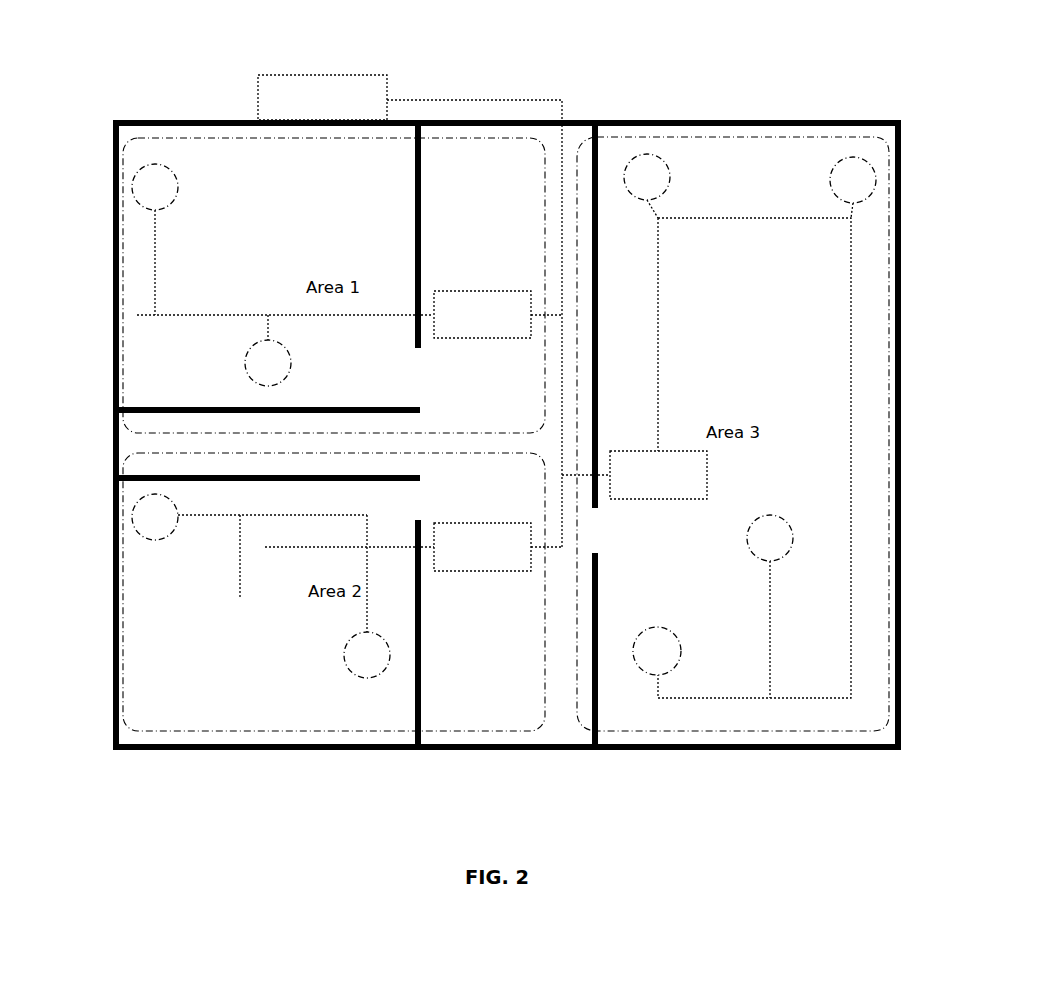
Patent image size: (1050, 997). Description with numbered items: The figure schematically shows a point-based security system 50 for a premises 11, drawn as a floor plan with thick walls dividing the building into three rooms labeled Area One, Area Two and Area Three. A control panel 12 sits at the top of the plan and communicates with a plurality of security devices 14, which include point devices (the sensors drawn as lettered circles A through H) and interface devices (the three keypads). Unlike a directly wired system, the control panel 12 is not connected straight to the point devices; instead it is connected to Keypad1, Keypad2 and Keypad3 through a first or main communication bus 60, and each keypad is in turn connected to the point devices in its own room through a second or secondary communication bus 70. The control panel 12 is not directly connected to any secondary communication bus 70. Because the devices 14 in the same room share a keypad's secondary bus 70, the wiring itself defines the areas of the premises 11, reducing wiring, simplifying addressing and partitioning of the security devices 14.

The premises 11 is at (113, 355).
The control panel 12 is at (310, 74).
The security devices 14 is at (504, 410).
The security system 50 is at (930, 86).
The first or main communication bus 60 is at (481, 99).
The second or secondary communication bus 70 is at (387, 314).